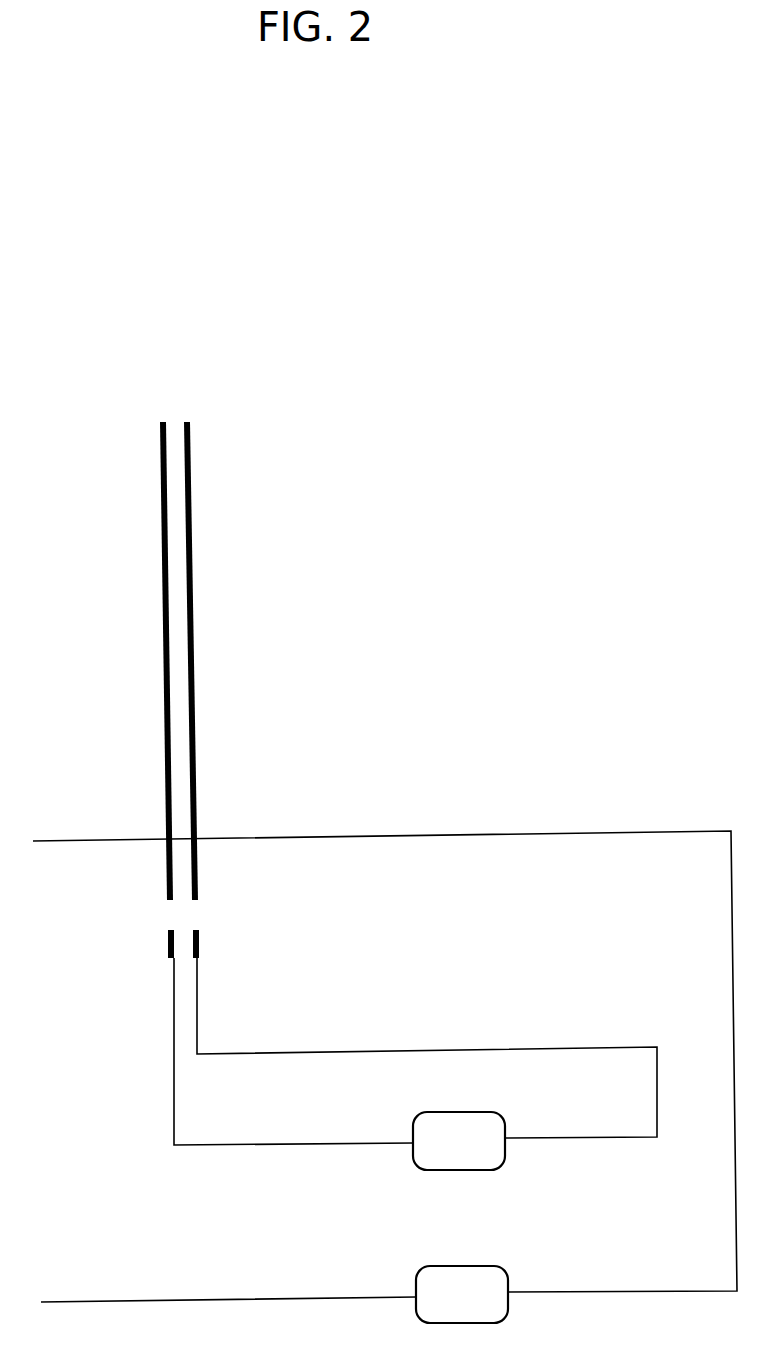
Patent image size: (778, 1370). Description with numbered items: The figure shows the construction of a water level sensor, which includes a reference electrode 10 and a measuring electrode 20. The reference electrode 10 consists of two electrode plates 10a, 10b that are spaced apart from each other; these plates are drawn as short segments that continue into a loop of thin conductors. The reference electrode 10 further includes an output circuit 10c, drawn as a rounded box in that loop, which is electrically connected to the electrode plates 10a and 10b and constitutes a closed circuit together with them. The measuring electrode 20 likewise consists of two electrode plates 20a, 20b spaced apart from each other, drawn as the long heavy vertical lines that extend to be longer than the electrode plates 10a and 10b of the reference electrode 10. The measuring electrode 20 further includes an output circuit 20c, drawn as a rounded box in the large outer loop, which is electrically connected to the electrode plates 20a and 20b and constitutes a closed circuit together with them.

The reference electrode 10 is at (311, 1004).
The electrode plate 10a is at (168, 949).
The electrode plate 10b is at (200, 949).
The output circuit 10c is at (487, 1112).
The measuring electrode 20 is at (286, 743).
The electrode plate 20a is at (160, 573).
The electrode plate 20b is at (192, 572).
The output circuit 20c is at (488, 1266).